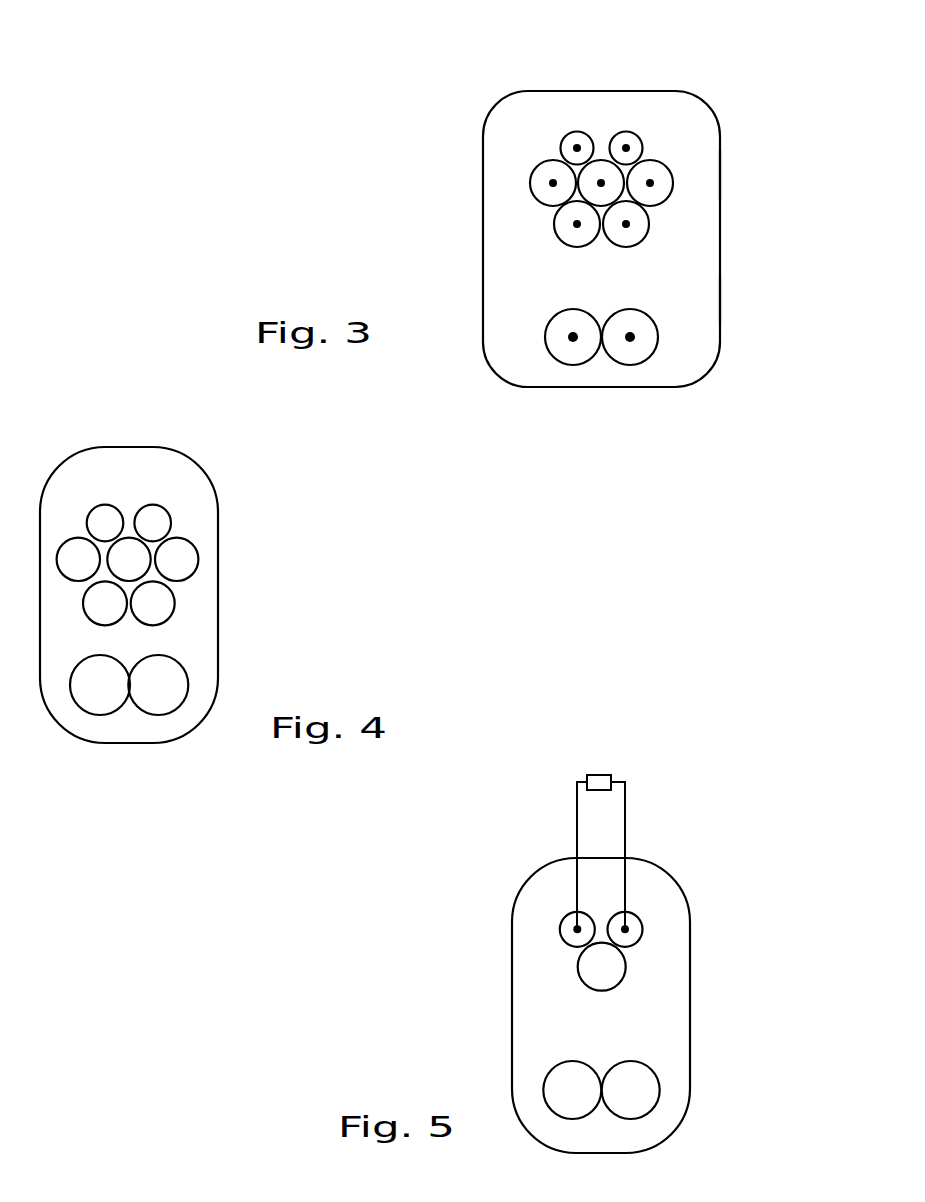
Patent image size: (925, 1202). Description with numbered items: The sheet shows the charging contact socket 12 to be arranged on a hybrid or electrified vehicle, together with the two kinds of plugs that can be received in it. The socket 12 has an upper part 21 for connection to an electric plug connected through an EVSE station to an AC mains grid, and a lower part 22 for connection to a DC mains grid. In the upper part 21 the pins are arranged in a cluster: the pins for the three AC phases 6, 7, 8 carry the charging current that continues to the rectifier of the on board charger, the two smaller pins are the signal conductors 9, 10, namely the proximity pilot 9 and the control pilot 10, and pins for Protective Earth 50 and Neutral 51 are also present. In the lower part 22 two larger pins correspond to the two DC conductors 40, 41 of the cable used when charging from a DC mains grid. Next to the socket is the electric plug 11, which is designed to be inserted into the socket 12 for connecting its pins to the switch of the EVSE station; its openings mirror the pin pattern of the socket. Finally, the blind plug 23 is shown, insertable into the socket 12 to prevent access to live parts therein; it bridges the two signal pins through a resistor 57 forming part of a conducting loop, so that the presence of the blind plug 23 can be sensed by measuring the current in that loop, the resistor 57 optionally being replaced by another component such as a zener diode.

In FIG. 3, the charging contact socket 12 is at (540, 90).
In FIG. 3, the upper part 21 is at (722, 173).
In FIG. 3, the lower part 22 is at (721, 298).
In FIG. 3, the Protective Earth pin 50 is at (601, 183).
In FIG. 3, the proximity pilot signal conductor 9 is at (577, 148).
In FIG. 3, the control pilot signal conductor 10 is at (627, 148).
In FIG. 3, the AC phase 6 is at (547, 183).
In FIG. 3, the Neutral pin 51 is at (653, 183).
In FIG. 3, the AC phase 7 is at (572, 227).
In FIG. 3, the AC phase 8 is at (633, 227).
In FIG. 3, the DC conductor 40 is at (567, 342).
In FIG. 3, the DC conductor 41 is at (637, 340).
In FIG. 4, the electric plug 11 is at (190, 732).
In FIG. 5, the blind plug 23 is at (658, 868).
In FIG. 5, the resistor 57 is at (602, 775).